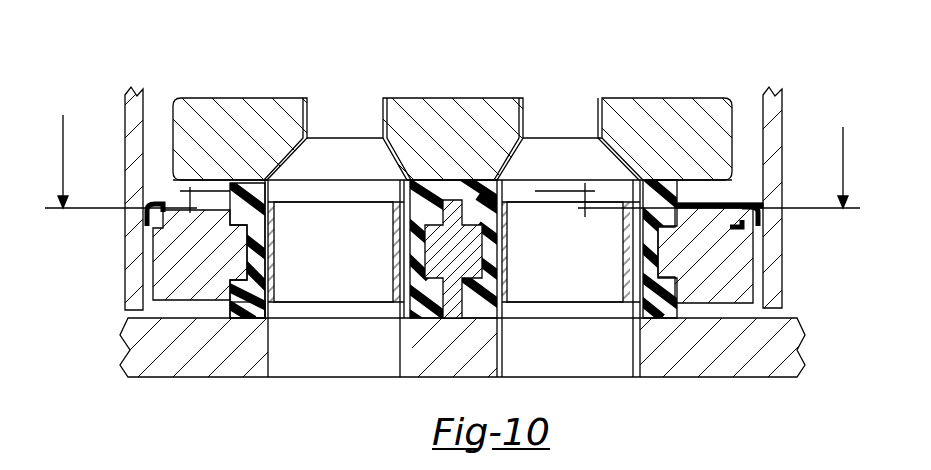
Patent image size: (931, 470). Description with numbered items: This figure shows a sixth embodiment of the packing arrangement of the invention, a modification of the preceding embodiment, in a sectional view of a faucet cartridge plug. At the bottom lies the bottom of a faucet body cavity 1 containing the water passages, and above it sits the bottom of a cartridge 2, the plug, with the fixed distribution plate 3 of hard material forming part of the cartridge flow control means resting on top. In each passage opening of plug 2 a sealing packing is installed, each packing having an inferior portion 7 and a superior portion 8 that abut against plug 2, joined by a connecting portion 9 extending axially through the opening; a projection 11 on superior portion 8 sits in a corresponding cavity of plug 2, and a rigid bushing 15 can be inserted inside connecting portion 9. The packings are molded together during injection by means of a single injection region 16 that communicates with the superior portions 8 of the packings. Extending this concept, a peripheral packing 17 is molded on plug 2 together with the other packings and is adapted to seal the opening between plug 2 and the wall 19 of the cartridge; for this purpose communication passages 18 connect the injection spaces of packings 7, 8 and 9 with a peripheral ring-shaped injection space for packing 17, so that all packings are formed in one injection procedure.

The bottom of a faucet body cavity 1 is at (162, 363).
The bottom of a cartridge 2 is at (168, 280).
The fixed distribution plate 3 is at (204, 122).
The inferior portion 7 is at (247, 312).
The superior portion 8 is at (247, 188).
The connecting portion 9 is at (503, 257).
The projection 11 is at (452, 187).
The rigid bushing 15 is at (273, 258).
The injection region 16 is at (460, 182).
The peripheral packing 17 is at (757, 205).
The communication passage 18 is at (698, 200).
The wall of the cartridge 19 is at (777, 270).